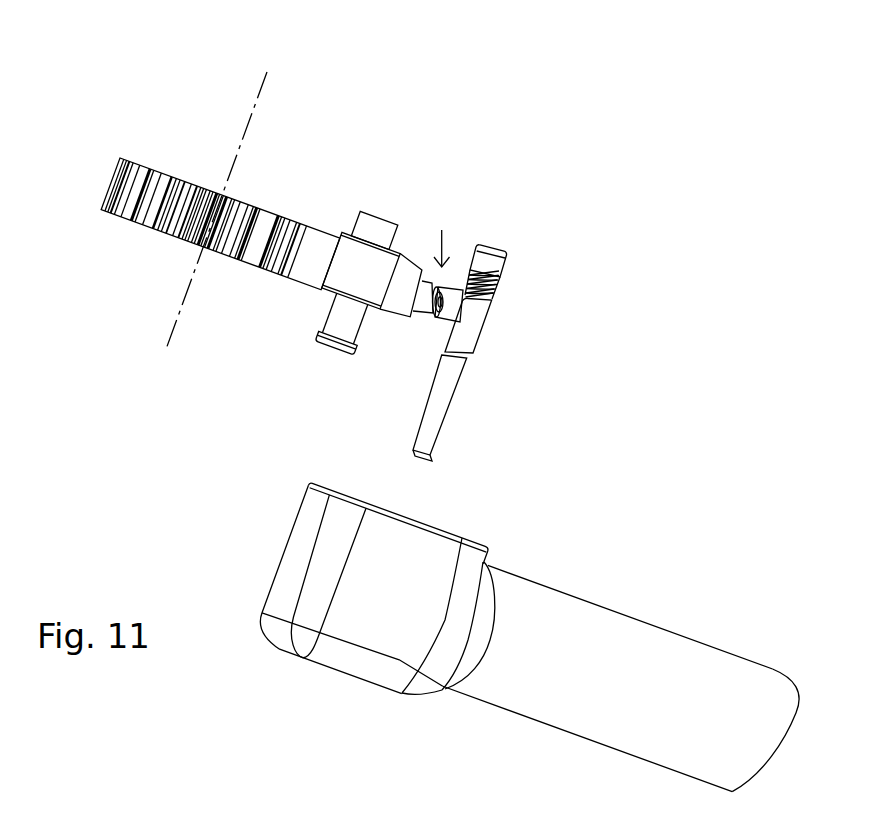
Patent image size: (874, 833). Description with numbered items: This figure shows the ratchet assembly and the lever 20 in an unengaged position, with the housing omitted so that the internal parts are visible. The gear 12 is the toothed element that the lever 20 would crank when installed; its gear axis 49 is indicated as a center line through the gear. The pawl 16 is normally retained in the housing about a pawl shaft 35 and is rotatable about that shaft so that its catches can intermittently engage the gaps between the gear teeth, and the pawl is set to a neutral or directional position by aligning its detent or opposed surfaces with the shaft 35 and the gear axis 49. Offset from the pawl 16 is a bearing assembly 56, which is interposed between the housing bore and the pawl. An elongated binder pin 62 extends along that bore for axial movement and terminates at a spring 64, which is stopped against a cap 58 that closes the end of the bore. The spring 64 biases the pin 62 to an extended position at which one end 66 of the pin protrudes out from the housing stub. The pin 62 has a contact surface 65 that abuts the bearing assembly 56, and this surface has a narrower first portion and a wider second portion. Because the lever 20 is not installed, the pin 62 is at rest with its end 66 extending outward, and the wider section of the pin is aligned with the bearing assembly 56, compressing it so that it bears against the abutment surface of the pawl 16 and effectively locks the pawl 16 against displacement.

The gear 12 is at (136, 162).
The pawl 16 is at (340, 232).
The removable lever 20 is at (622, 638).
The pawl shaft 35 is at (378, 225).
The gear axis 49 is at (267, 70).
The bearing assembly 56 is at (442, 232).
The cap 58 is at (492, 240).
The binder pin 62 is at (440, 402).
The spring 64 is at (498, 292).
The contact surface 65 is at (445, 326).
The end of pin 66 is at (415, 460).